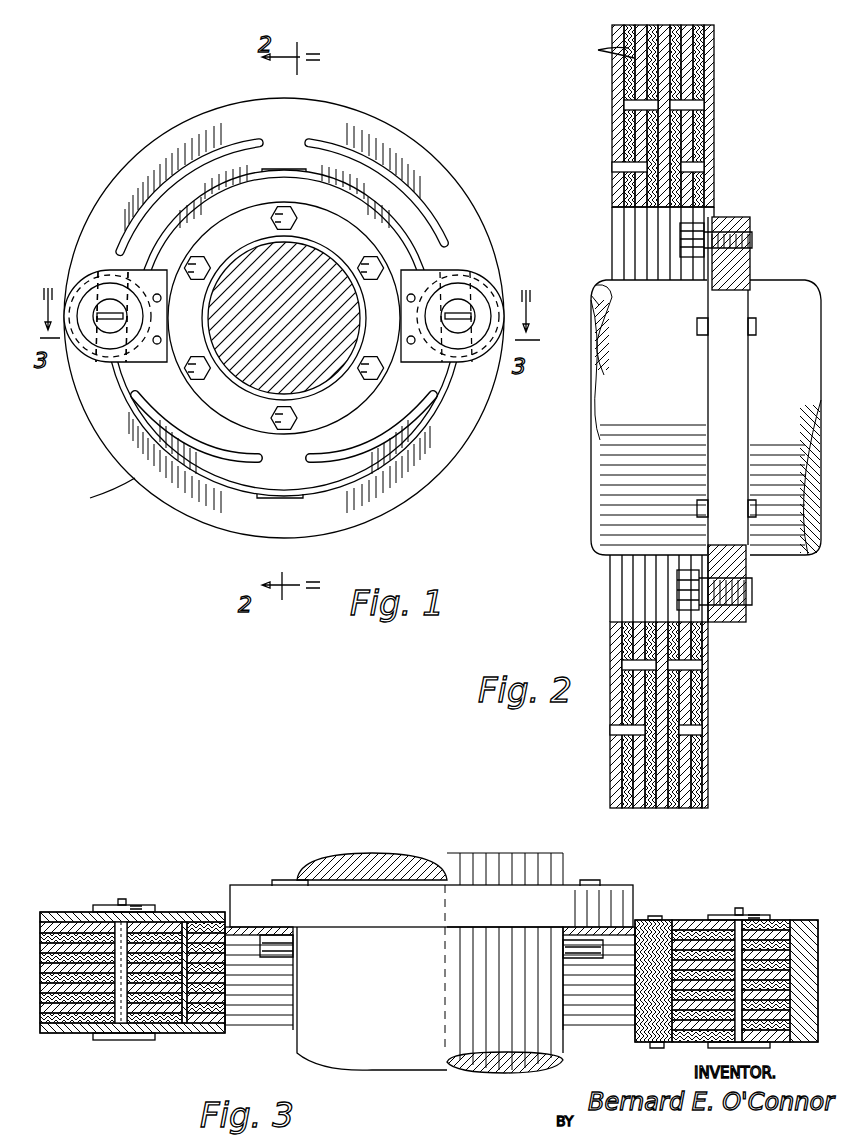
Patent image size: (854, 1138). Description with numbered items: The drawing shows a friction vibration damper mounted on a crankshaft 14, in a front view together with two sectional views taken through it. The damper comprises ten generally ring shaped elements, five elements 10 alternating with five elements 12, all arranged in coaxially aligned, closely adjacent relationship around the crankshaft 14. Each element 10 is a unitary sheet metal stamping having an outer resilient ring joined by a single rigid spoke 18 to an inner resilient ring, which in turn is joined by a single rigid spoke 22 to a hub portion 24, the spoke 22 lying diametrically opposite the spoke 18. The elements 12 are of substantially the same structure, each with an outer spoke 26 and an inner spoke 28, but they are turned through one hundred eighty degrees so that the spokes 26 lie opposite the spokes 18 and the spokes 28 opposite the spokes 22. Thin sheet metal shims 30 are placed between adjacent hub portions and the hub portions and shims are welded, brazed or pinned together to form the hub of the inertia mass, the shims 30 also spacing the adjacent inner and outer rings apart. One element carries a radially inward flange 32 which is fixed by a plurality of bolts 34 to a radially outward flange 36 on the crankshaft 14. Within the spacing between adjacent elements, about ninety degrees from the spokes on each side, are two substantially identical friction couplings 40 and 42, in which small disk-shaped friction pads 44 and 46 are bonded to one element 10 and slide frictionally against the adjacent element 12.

In FIG. 1, the ring shaped element 10 is at (388, 150).
In FIG. 2, the ring shaped element 10 is at (624, 28).
In FIG. 3, the ring shaped element 10 is at (52, 924).
In FIG. 2, the ring shaped element 12 is at (634, 58).
In FIG. 3, the ring shaped element 12 is at (114, 920).
In FIG. 1, the crankshaft 14 is at (242, 290).
In FIG. 2, the crankshaft 14 is at (590, 505).
In FIG. 3, the crankshaft 14 is at (444, 1058).
In FIG. 1, the spoke 18 is at (294, 146).
In FIG. 1, the spoke 22 is at (272, 470).
In FIG. 1, the hub portion 24 is at (260, 444).
In FIG. 1, the spoke 26 is at (290, 498).
In FIG. 1, the spoke 28 is at (304, 170).
In FIG. 2, the shim 30 is at (706, 194).
In FIG. 3, the shim 30 is at (184, 922).
In FIG. 2, the flange 32 is at (752, 262).
In FIG. 3, the flange 32 is at (246, 926).
In FIG. 2, the bolt 34 is at (752, 596).
In FIG. 3, the bolt 34 is at (578, 928).
In FIG. 2, the flange 36 is at (748, 565).
In FIG. 3, the flange 36 is at (624, 894).
In FIG. 1, the friction coupling 40 is at (92, 292).
In FIG. 3, the friction coupling 40 is at (144, 905).
In FIG. 1, the friction coupling 42 is at (462, 278).
In FIG. 3, the friction coupling 42 is at (696, 918).
In FIG. 1, the friction pad 44 is at (98, 272).
In FIG. 1, the friction pad 46 is at (130, 272).